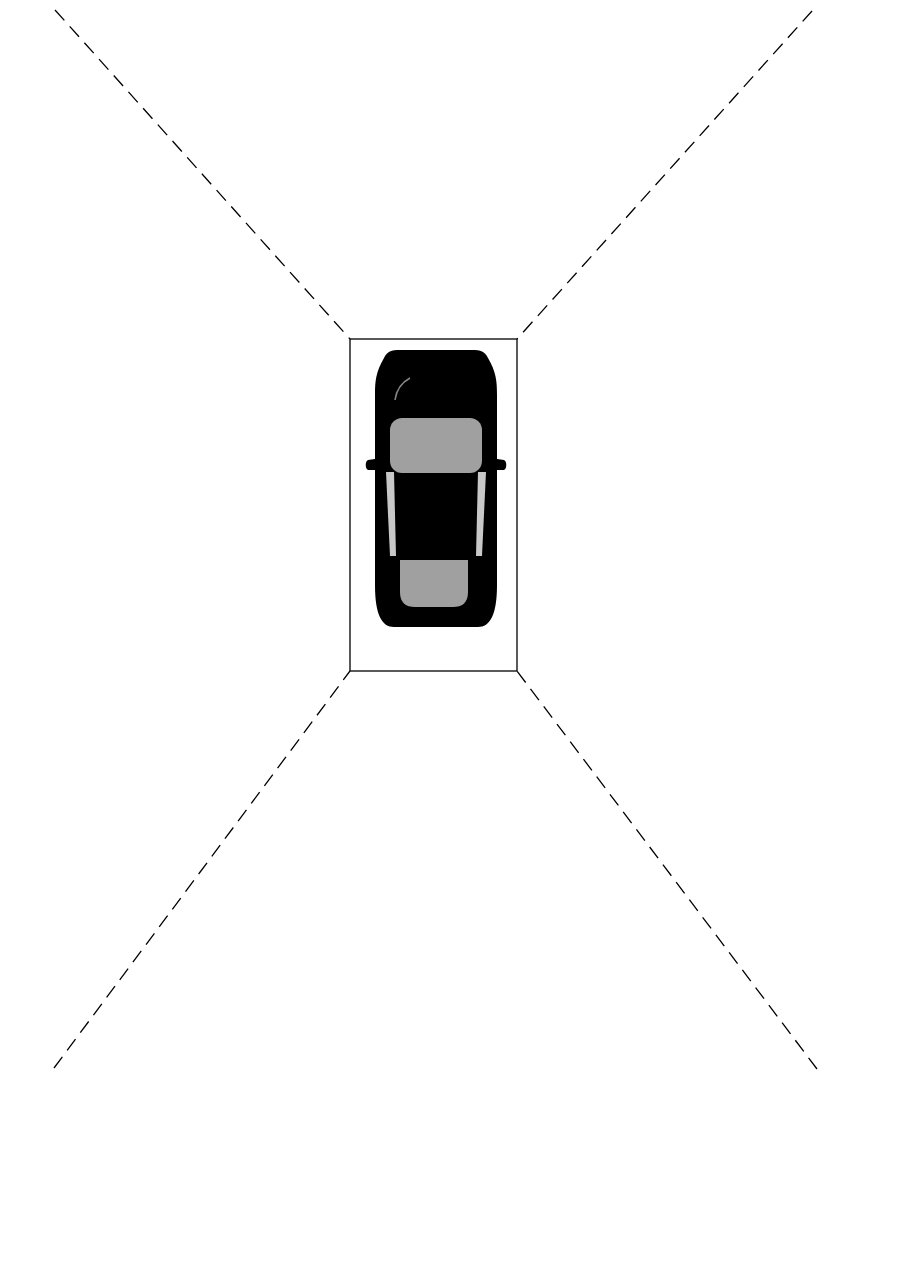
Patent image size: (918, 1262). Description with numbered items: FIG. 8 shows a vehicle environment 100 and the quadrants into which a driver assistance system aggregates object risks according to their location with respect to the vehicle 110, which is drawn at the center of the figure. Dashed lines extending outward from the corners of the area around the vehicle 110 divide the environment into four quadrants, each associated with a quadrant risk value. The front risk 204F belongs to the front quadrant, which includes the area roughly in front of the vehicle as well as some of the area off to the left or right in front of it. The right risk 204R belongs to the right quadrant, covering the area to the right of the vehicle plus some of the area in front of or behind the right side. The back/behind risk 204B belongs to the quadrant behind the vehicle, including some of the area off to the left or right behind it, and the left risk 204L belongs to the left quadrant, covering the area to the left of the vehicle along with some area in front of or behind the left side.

The vehicle environment 100 is at (425, 48).
The vehicle 110 is at (423, 660).
The front risk 204F is at (463, 191).
The back/behind risk 204B is at (422, 795).
The left risk 204L is at (237, 516).
The right risk 204R is at (683, 516).